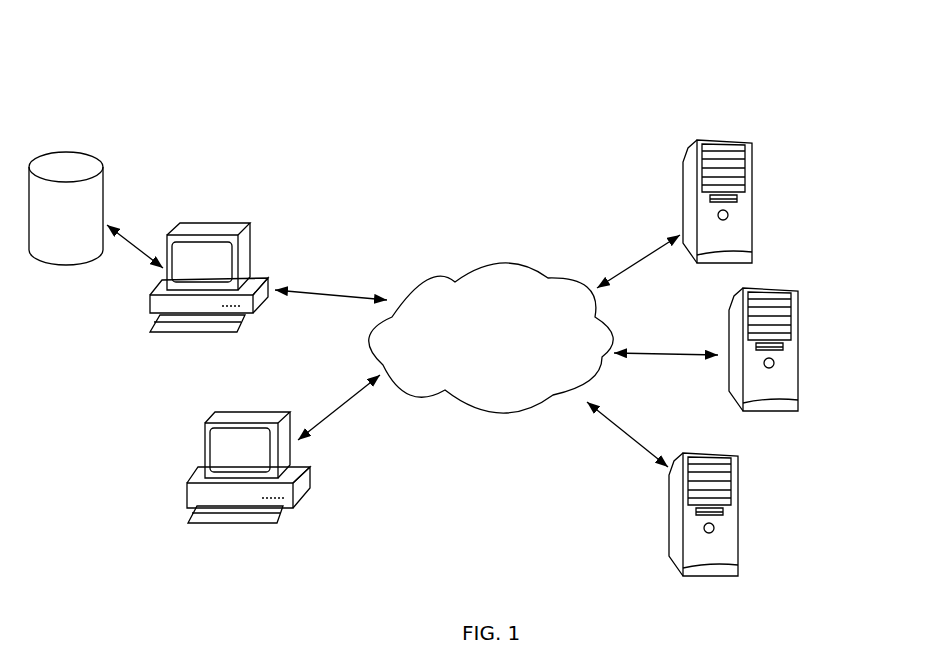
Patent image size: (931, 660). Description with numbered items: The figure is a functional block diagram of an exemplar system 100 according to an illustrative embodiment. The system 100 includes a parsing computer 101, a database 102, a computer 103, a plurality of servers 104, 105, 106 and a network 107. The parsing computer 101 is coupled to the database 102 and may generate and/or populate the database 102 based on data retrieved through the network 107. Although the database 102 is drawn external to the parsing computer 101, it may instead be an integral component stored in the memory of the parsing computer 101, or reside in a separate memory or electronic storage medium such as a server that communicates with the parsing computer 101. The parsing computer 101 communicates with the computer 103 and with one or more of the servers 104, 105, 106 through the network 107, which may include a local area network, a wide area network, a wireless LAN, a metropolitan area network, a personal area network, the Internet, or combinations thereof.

The system 100 is at (177, 53).
The parsing computer 101 is at (148, 308).
The database 102 is at (93, 162).
The computer 103 is at (187, 498).
The server 104 is at (752, 185).
The server 105 is at (765, 412).
The server 106 is at (738, 500).
The network 107 is at (487, 262).